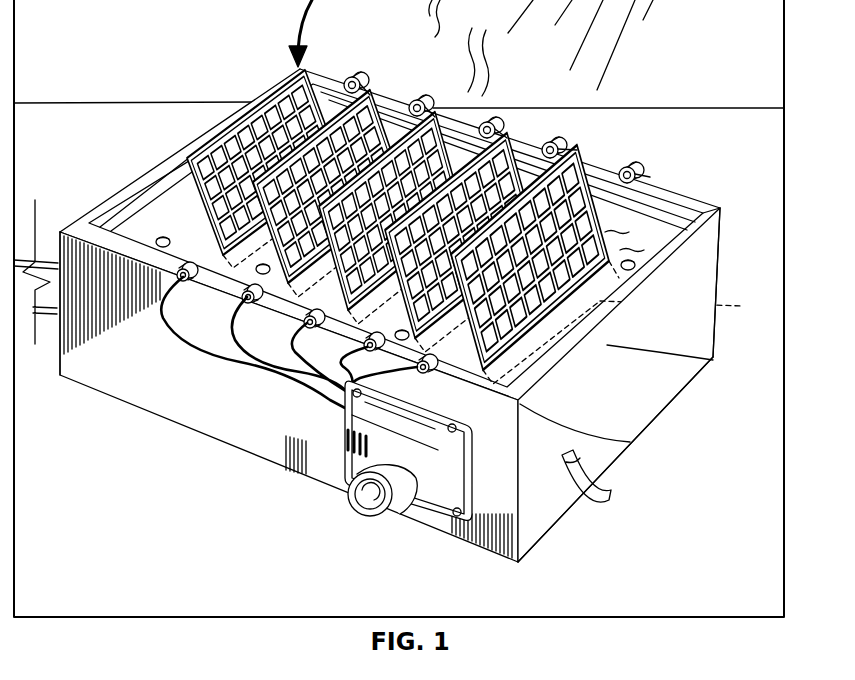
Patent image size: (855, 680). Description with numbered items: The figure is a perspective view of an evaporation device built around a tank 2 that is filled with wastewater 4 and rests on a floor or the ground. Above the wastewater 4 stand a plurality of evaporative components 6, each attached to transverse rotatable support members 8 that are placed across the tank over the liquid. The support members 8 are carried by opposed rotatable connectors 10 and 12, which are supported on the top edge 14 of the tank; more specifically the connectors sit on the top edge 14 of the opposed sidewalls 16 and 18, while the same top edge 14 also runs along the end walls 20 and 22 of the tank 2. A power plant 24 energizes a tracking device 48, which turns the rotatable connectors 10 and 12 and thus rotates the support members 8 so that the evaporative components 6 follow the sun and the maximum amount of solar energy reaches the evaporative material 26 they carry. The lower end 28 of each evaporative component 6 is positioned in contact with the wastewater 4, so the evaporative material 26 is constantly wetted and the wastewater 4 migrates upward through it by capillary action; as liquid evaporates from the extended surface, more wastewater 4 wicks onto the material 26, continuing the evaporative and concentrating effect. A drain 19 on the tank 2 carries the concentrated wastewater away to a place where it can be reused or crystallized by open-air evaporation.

The tank 2 is at (63, 360).
The wastewater 4 is at (137, 227).
The evaporative component 6 is at (253, 104).
The transverse rotatable support member 8 is at (322, 80).
The rotatable connector 10 is at (636, 172).
The rotatable connector 12 is at (630, 442).
The top edge 14 is at (200, 140).
The sidewall 16 is at (722, 227).
The sidewall 18 is at (127, 370).
The drain 19 is at (613, 490).
The end wall 20 is at (85, 208).
The end wall 22 is at (710, 360).
The power plant 24 is at (432, 524).
The evaporative material 26 is at (495, 122).
The lower end 28 is at (497, 290).
The tracking device 48 is at (345, 440).